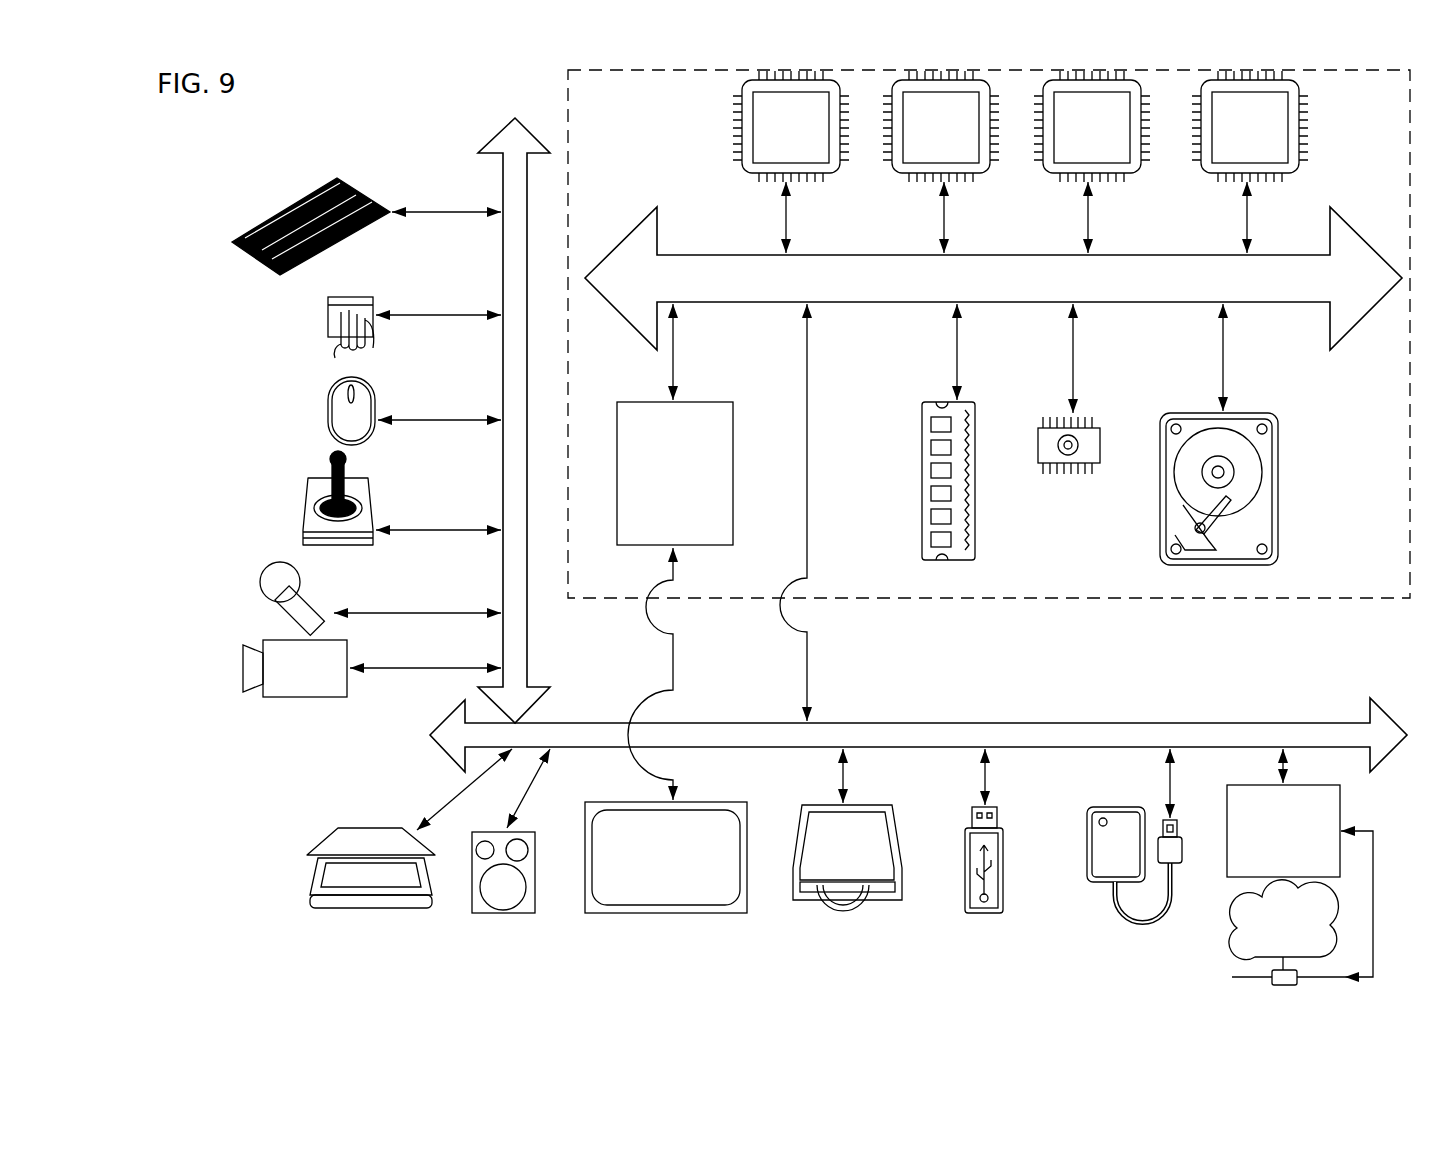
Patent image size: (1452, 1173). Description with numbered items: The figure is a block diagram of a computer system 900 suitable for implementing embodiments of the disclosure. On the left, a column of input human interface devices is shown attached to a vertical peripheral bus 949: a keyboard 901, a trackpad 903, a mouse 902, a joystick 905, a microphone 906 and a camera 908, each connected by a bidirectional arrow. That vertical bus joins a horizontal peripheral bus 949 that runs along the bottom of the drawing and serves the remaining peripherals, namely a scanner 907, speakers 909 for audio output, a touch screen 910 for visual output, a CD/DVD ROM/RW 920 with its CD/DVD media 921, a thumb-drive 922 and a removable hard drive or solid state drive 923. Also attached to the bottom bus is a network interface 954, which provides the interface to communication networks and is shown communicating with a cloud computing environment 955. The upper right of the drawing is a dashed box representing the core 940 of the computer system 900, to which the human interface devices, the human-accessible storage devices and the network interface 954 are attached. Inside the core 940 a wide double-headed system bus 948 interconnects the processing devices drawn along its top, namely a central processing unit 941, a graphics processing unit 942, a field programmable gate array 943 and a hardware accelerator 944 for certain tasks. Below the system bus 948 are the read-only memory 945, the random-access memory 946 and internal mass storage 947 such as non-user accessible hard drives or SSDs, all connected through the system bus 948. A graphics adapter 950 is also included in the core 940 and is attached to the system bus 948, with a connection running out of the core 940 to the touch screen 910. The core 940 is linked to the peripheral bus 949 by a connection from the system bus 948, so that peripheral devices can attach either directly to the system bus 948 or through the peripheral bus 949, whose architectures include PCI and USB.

The computer system 900 is at (253, 119).
The keyboard 901 is at (232, 246).
The mouse 902 is at (325, 412).
The trackpad 903 is at (325, 327).
The joystick 905 is at (303, 522).
The microphone 906 is at (262, 590).
The scanner 907 is at (312, 895).
The camera 908 is at (243, 668).
The speakers 909 is at (500, 913).
The touch screen 910 is at (656, 913).
The CD/DVD ROM/RW 920 is at (892, 900).
The CD/DVD media 921 is at (826, 912).
The thumb-drive 922 is at (978, 913).
The removable hard drive or solid state drive 923 is at (1092, 882).
The core 940 is at (1010, 598).
The central processing unit 941 is at (770, 156).
The graphics processing unit 942 is at (920, 156).
The field programmable gate array 943 is at (1071, 156).
The hardware accelerator 944 is at (1229, 156).
The read-only memory 945 is at (1060, 475).
The random-access memory 946 is at (922, 475).
The internal mass storage 947 is at (1172, 412).
The system bus 948 is at (1088, 294).
The peripheral bus 949 is at (502, 160).
The graphics adapter 950 is at (675, 601).
The network interface 954 is at (1300, 881).
The cloud computing environment 955 is at (1232, 945).